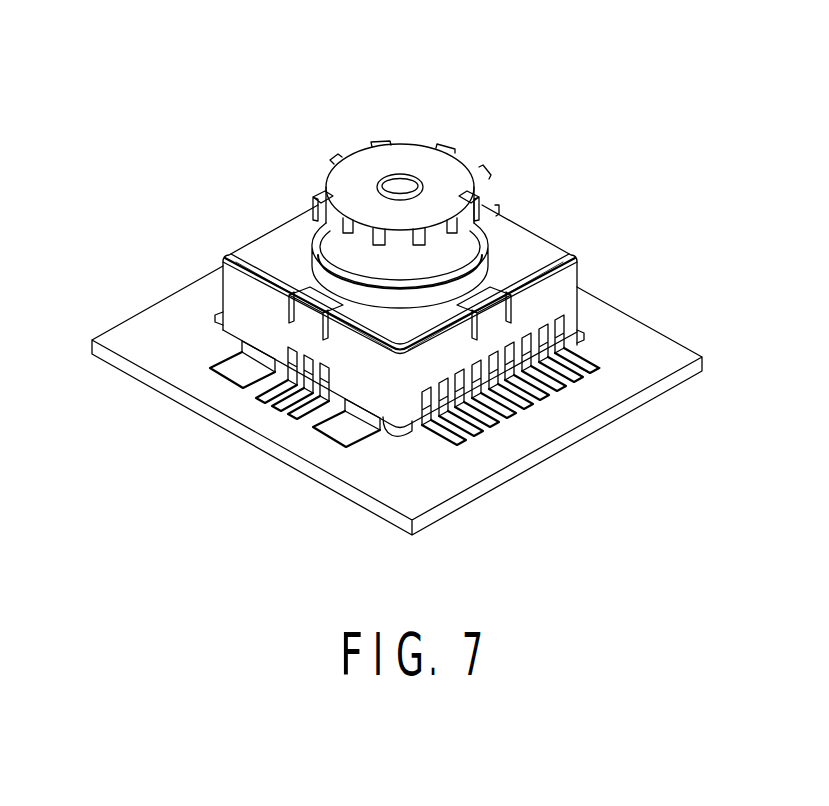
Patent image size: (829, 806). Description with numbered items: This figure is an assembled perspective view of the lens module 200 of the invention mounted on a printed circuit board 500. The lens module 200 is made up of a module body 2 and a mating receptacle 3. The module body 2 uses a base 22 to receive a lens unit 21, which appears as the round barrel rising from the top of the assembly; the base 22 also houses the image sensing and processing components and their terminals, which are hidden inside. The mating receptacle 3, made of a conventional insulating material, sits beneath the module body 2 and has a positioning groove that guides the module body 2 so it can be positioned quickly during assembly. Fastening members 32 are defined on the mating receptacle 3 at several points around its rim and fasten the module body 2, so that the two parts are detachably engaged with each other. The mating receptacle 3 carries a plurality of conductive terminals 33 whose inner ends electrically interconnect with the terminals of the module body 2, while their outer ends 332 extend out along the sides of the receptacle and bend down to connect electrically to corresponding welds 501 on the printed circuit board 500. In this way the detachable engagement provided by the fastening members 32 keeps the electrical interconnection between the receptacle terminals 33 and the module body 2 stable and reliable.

The lens module 200 is at (480, 33).
The module body 2 is at (431, 126).
The lens unit 21 is at (353, 163).
The mating receptacle 3 is at (529, 218).
The base 22 is at (517, 258).
The fastening members 32 is at (313, 212).
The conductive terminals 33 is at (298, 433).
The outer ends 332 is at (578, 362).
The printed circuit board 500 is at (158, 407).
The welds 501 is at (590, 352).